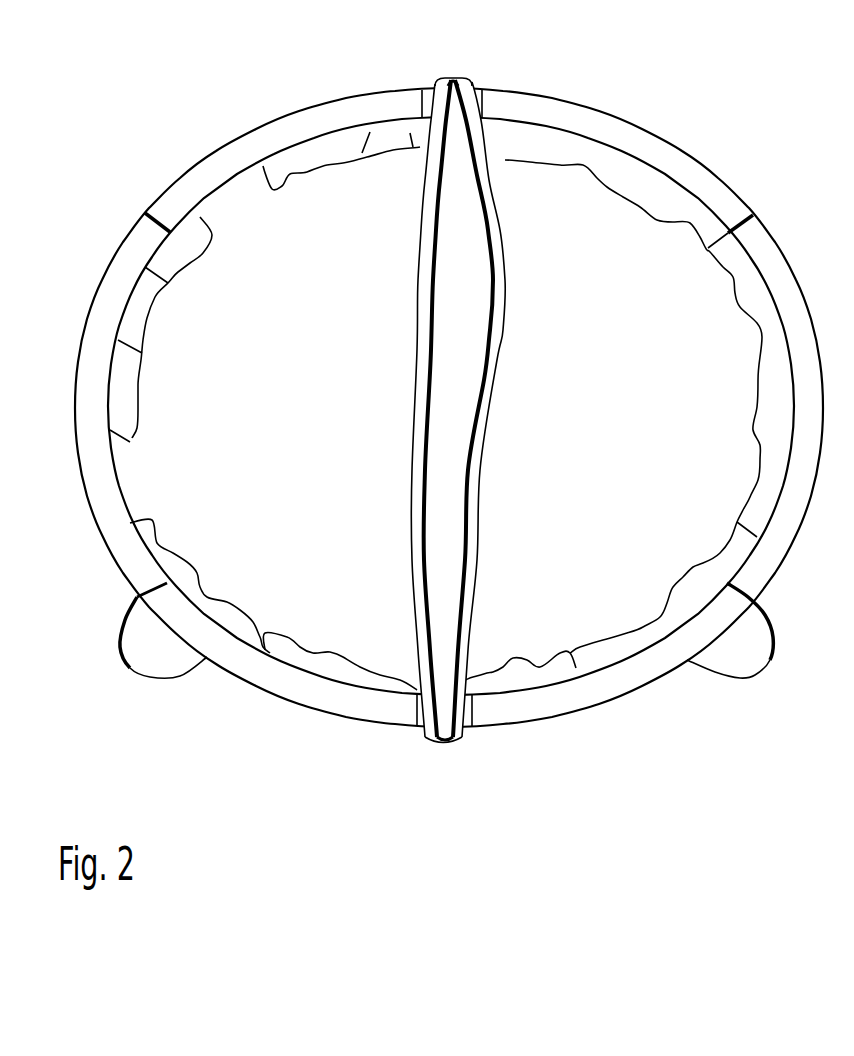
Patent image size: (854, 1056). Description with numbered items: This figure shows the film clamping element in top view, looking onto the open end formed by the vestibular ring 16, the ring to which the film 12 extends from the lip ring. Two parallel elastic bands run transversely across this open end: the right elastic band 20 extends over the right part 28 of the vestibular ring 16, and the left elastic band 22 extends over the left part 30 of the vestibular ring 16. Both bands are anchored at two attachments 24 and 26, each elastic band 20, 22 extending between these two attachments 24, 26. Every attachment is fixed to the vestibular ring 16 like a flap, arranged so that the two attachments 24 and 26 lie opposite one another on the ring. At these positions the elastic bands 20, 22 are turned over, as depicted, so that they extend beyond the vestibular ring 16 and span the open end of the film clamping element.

The film 12 is at (597, 657).
The vestibular ring 16 is at (588, 125).
The elastic band 20 is at (477, 462).
The further elastic band 22 is at (420, 478).
The attachment 24 is at (468, 77).
The attachment 26 is at (471, 733).
The right part of the vestibular ring 28 is at (687, 175).
The left part of the vestibular ring 30 is at (123, 550).